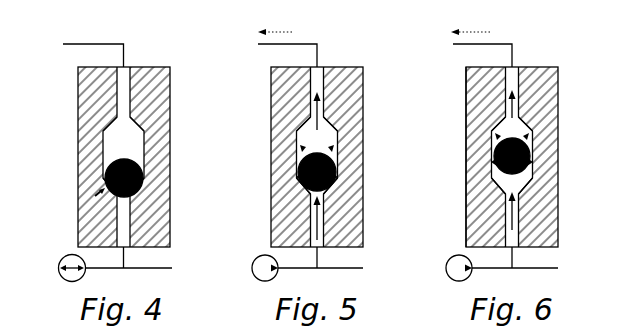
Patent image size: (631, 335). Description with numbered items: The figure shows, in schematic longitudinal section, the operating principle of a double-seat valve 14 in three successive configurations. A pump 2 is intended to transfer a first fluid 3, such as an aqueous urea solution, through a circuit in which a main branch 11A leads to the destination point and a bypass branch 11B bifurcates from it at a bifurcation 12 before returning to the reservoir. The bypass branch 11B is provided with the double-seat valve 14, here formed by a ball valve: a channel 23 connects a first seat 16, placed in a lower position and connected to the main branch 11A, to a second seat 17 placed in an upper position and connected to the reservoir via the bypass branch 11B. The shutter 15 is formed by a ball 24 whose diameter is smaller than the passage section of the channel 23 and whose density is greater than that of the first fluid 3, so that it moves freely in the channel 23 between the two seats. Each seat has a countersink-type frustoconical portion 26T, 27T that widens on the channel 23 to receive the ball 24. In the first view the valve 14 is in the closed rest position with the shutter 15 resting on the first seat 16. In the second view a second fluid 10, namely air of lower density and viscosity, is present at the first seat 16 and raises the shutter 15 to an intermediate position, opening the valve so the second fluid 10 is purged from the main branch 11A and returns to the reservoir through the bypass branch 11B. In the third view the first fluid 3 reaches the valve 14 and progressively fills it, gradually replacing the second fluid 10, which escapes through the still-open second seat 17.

In FIG. 4, the pump 2 is at (59, 262).
In FIG. 5, the pump 2 is at (254, 260).
In FIG. 6, the pump 2 is at (448, 260).
In FIG. 6, the first fluid 3 is at (466, 210).
In FIG. 4, the second fluid 10 is at (118, 88).
In FIG. 5, the second fluid 10 is at (315, 143).
In FIG. 6, the second fluid 10 is at (510, 82).
In FIG. 4, the main branch 11A is at (155, 270).
In FIG. 5, the main branch 11A is at (352, 270).
In FIG. 6, the main branch 11A is at (544, 270).
In FIG. 4, the bypass branch 11B is at (102, 42).
In FIG. 5, the bypass branch 11B is at (310, 42).
In FIG. 6, the bypass branch 11B is at (503, 42).
In FIG. 4, the bifurcation 12 is at (126, 268).
In FIG. 5, the bifurcation 12 is at (320, 268).
In FIG. 6, the bifurcation 12 is at (515, 268).
In FIG. 4, the double-seat valve 14 is at (123, 125).
In FIG. 5, the double-seat valve 14 is at (323, 125).
In FIG. 6, the double-seat valve 14 is at (525, 125).
In FIG. 4, the shutter 15 is at (110, 155).
In FIG. 5, the shutter 15 is at (356, 168).
In FIG. 6, the shutter 15 is at (552, 153).
In FIG. 4, the first seat 16 is at (77, 210).
In FIG. 5, the first seat 16 is at (361, 190).
In FIG. 6, the first seat 16 is at (557, 190).
In FIG. 4, the second seat 17 is at (167, 105).
In FIG. 5, the second seat 17 is at (361, 106).
In FIG. 6, the second seat 17 is at (557, 106).
In FIG. 4, the channel 23 is at (157, 136).
In FIG. 5, the channel 23 is at (355, 136).
In FIG. 6, the channel 23 is at (548, 137).
In FIG. 4, the ball 24 is at (84, 168).
In FIG. 5, the ball 24 is at (332, 172).
In FIG. 6, the ball 24 is at (532, 160).
In FIG. 4, the frustoconical portion 26T is at (79, 194).
In FIG. 5, the frustoconical portion 26T is at (330, 186).
In FIG. 6, the frustoconical portion 26T is at (532, 185).
In FIG. 4, the frustoconical portion 27T is at (150, 112).
In FIG. 5, the frustoconical portion 27T is at (346, 113).
In FIG. 6, the frustoconical portion 27T is at (540, 112).